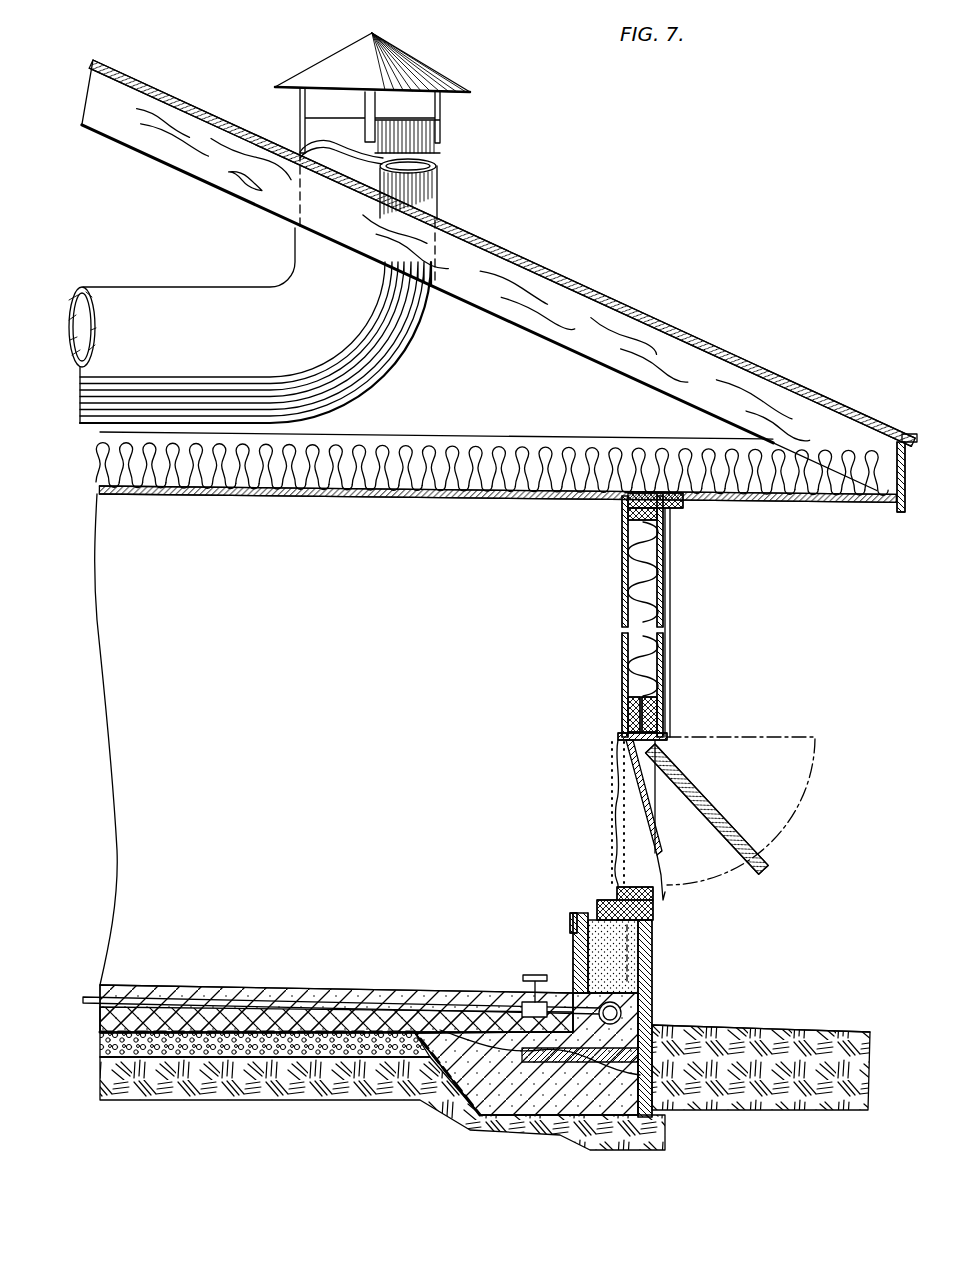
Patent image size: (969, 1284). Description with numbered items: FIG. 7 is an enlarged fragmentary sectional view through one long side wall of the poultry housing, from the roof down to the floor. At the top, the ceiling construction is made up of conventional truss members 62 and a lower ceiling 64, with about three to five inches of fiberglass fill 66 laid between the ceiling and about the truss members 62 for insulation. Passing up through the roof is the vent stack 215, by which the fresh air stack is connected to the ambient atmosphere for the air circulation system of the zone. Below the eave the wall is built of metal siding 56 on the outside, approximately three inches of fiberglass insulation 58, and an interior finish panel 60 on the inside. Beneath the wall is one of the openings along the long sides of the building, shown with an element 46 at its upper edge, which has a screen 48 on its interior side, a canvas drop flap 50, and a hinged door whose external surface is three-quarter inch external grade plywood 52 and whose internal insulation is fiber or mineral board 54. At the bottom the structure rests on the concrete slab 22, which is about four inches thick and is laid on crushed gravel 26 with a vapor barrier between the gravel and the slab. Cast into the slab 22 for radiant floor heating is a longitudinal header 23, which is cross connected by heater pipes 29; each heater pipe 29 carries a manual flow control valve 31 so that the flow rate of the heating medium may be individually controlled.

The vent stack 215 is at (273, 287).
The truss members 62 is at (503, 328).
The fiberglass fill 66 is at (509, 452).
The lower ceiling 64 is at (388, 492).
The interior finish panel 60 is at (625, 537).
The fiberglass insulation 58 is at (640, 605).
The siding 56 is at (668, 609).
The flexible joint 46 is at (598, 813).
The screen 48 is at (616, 838).
The canvas drop flap 50 is at (662, 853).
The plywood 52 is at (730, 811).
The fiber or mineral board 54 is at (724, 831).
The slab 22 is at (293, 986).
The heater pipes 29 is at (447, 1015).
The flow control valves 31 is at (525, 1000).
The longitudinal header 23 is at (624, 1017).
The crushed gravel 26 is at (100, 1040).